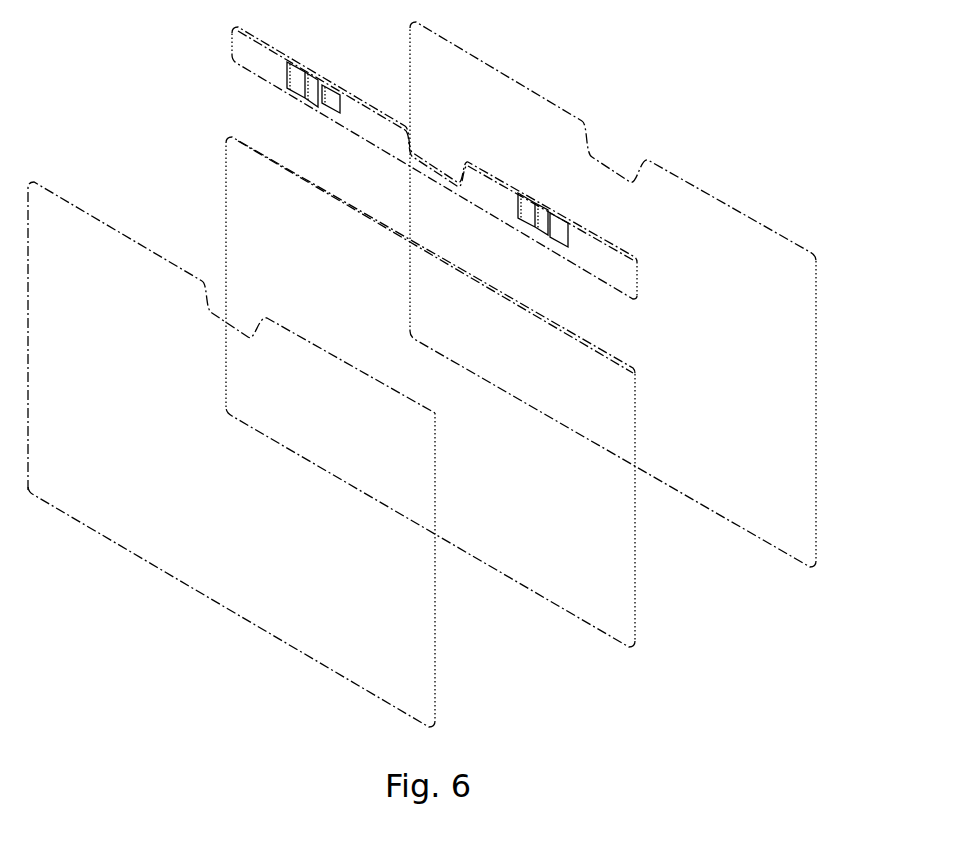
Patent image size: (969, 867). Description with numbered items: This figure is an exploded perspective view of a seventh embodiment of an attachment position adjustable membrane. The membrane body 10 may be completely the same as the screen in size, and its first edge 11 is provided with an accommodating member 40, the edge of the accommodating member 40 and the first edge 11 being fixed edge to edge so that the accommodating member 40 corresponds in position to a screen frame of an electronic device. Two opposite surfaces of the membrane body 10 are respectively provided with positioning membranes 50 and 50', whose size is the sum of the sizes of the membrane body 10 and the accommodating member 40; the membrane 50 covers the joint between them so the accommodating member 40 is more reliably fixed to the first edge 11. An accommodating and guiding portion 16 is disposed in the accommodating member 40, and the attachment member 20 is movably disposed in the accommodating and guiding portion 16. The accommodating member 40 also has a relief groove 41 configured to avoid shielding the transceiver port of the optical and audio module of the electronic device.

The membrane body 10 is at (225, 200).
The first edge 11 is at (267, 161).
The accommodating and guiding portion 16 is at (329, 84).
The attachment member 20 is at (307, 84).
The accommodating member 40 is at (253, 57).
The relief groove 41 is at (435, 170).
The positioning membrane 50 is at (231, 454).
The positioning membrane 50' is at (613, 323).